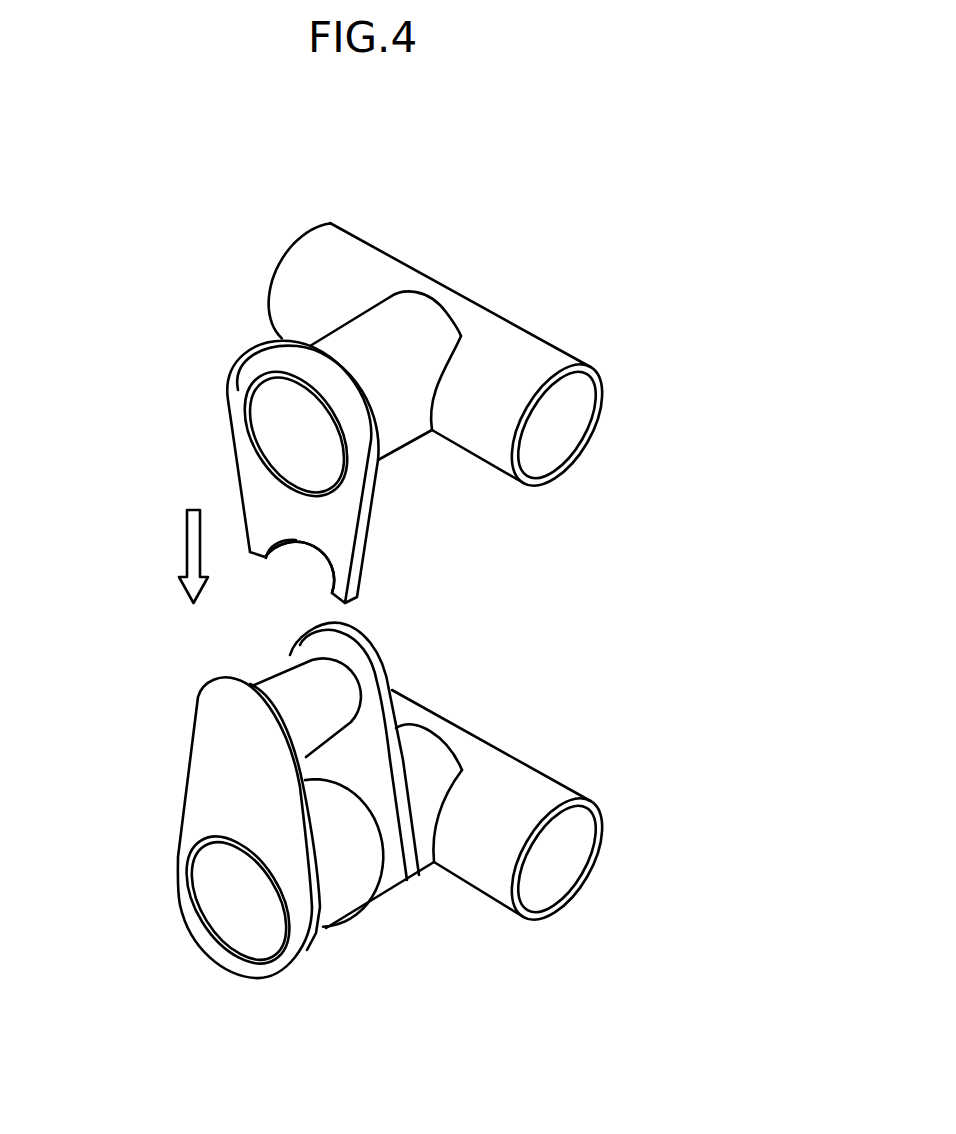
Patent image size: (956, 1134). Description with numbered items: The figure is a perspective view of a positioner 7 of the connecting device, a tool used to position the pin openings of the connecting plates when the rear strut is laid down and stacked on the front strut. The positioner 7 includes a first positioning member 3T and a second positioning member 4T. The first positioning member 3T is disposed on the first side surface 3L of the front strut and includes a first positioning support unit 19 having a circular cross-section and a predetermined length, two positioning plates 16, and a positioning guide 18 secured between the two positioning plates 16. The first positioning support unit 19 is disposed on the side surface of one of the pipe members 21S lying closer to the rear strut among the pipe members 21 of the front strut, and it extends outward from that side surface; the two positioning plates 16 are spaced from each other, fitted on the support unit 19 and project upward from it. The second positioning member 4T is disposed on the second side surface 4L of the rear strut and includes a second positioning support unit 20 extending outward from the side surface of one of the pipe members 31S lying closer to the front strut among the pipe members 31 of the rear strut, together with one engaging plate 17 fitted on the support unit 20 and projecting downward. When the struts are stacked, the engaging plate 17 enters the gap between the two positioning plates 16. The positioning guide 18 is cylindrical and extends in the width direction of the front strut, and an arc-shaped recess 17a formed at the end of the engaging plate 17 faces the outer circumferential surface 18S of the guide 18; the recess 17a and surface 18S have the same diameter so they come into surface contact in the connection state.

The positioner 7 is at (603, 174).
The second positioning member 4T is at (236, 335).
The second side surface 4L is at (476, 410).
The pipe member 31 is at (467, 362).
The pipe member 31S is at (512, 343).
The second positioning support unit 20 is at (371, 342).
The engaging plate 17 is at (226, 396).
The arc-shaped recess 17a is at (270, 575).
The first positioning member 3T is at (303, 993).
The first side surface 3L is at (477, 848).
The pipe member 21 is at (533, 812).
The pipe member 21S is at (528, 778).
The first positioning support unit 19 is at (350, 890).
The positioning guide 18 is at (303, 680).
The outer circumferential surface 18S is at (327, 683).
The positioning plate 16 is at (407, 768).